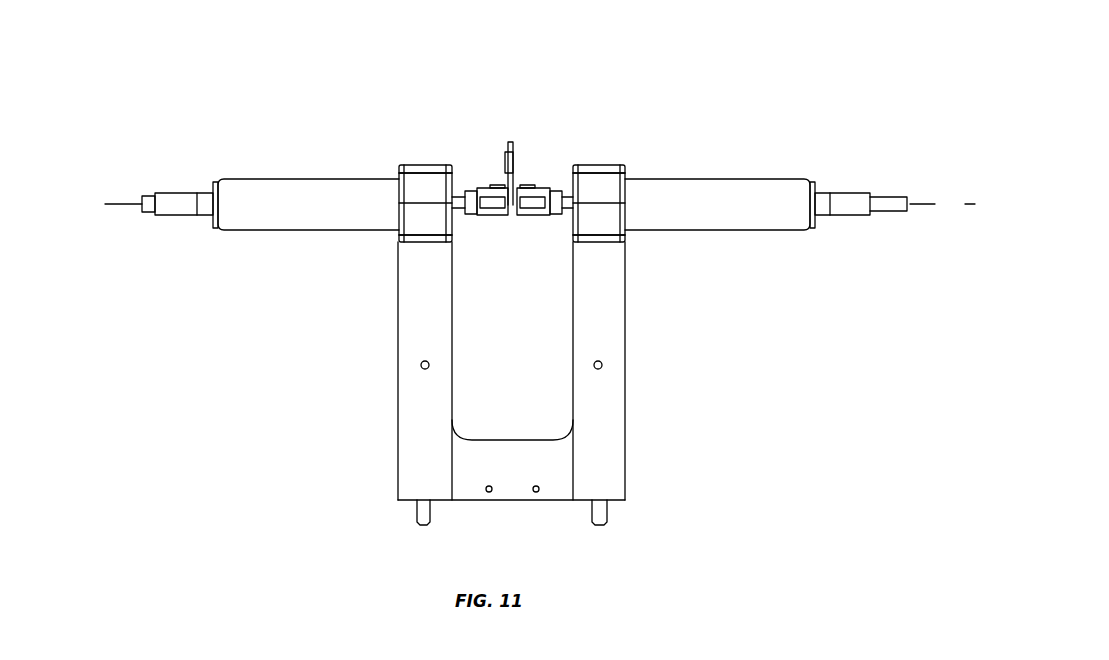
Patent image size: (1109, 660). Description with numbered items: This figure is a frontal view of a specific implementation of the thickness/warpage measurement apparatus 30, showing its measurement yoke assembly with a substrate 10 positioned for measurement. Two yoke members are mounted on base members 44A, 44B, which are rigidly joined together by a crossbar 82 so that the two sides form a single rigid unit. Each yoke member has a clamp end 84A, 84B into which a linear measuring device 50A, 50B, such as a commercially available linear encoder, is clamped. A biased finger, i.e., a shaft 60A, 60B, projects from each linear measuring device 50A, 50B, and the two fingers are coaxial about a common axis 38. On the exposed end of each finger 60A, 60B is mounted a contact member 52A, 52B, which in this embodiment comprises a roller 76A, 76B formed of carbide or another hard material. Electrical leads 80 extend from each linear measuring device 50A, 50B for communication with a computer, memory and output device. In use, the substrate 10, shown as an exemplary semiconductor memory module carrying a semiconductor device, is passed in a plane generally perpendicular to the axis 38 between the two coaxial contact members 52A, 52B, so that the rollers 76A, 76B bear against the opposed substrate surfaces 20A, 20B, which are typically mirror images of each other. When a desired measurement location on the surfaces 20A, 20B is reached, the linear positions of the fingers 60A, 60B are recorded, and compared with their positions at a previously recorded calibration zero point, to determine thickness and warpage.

The substrate 10 is at (507, 150).
The substrate surface 20A is at (471, 177).
The substrate surface 20B is at (535, 199).
The thickness/warpage measurement apparatus 30 is at (762, 117).
The axis 38 is at (940, 201).
The base member 44A is at (418, 313).
The base member 44B is at (605, 305).
The linear measuring device 50A is at (260, 197).
The linear measuring device 50B is at (697, 190).
The contact member 52A is at (472, 190).
The contact member 52B is at (554, 190).
The shaft 60A is at (453, 167).
The shaft 60B is at (574, 168).
The roller 76A is at (496, 216).
The roller 76B is at (535, 216).
The electrical leads 80 is at (146, 196).
The crossbar 82 is at (475, 462).
The clamp end 84A is at (408, 193).
The clamp end 84B is at (613, 193).